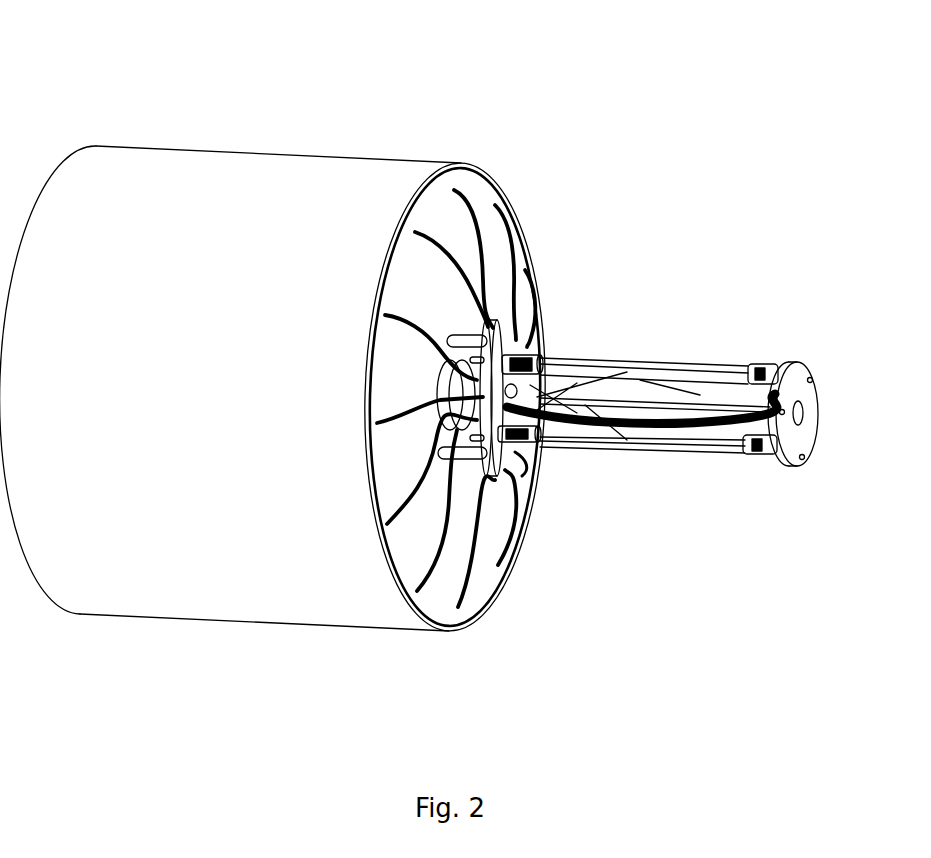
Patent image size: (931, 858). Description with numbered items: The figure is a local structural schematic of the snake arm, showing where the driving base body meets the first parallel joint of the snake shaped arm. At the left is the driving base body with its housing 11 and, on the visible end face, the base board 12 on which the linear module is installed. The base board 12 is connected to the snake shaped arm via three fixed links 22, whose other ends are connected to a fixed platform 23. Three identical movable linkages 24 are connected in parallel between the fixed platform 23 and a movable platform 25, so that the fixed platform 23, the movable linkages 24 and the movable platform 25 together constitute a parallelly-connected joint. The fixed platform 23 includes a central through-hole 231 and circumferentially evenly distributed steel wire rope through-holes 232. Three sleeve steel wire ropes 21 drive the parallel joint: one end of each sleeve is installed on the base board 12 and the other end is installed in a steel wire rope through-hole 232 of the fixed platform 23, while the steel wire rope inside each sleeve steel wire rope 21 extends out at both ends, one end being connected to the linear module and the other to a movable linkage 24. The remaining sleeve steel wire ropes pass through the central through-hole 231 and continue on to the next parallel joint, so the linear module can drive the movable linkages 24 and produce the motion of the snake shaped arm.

The housing 11 is at (285, 562).
The base board 12 is at (405, 545).
The sleeve steel wire rope 21 is at (403, 318).
The fixed link 22 is at (458, 333).
The fixed platform 23 is at (500, 345).
The central through-hole 231 is at (503, 463).
The steel wire rope through-hole 232 is at (503, 440).
The movable linkage 24 is at (678, 365).
The movable platform 25 is at (793, 365).